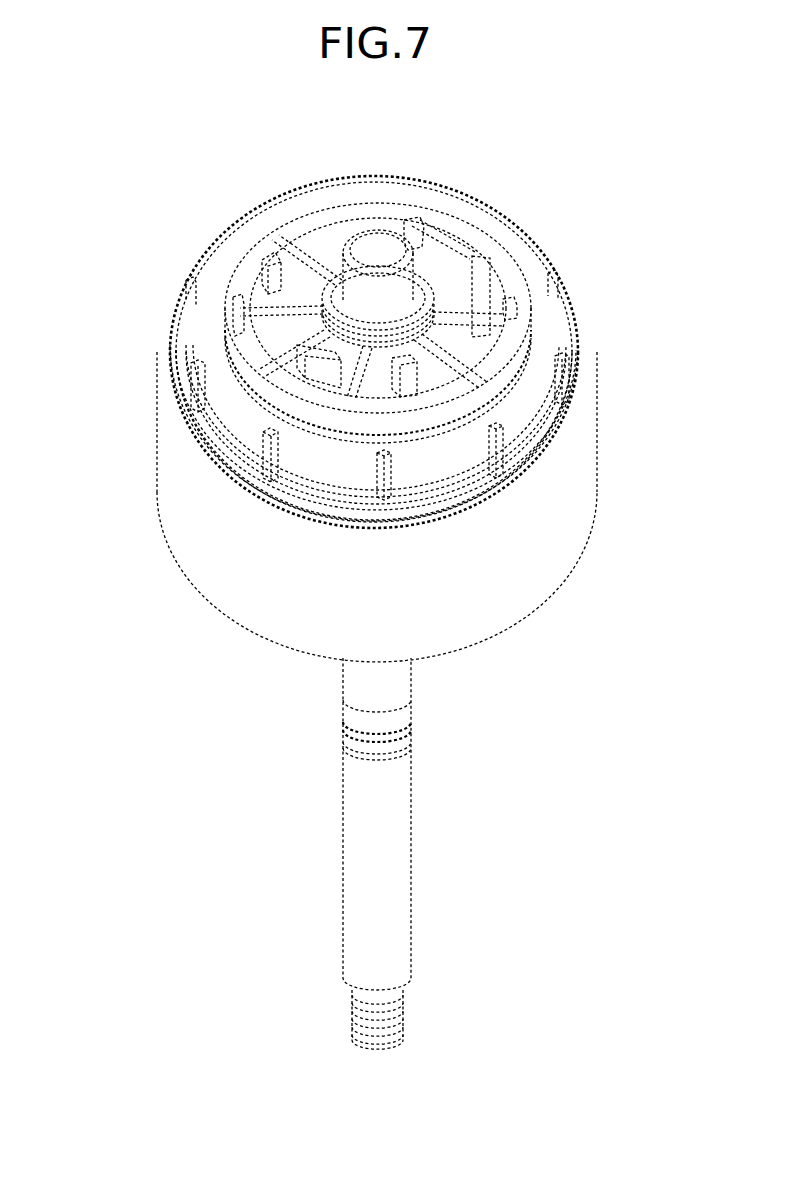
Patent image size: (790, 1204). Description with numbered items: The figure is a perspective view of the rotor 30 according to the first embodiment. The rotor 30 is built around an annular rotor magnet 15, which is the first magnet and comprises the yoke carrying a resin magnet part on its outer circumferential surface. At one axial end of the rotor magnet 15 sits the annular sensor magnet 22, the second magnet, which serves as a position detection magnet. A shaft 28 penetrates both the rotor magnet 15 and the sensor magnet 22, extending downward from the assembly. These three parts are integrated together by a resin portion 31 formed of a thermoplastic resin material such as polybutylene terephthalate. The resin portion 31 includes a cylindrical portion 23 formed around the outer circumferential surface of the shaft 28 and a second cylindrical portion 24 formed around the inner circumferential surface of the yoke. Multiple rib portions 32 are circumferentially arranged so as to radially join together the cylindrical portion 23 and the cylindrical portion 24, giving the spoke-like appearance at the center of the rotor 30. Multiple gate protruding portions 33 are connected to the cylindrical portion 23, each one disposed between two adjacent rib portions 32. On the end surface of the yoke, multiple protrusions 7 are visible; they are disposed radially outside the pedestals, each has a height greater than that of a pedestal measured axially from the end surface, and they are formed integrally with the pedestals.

The protrusions 7 is at (500, 444).
The rotor magnet 15 is at (562, 554).
The sensor magnet 22 is at (486, 221).
The cylindrical portion 23 is at (440, 290).
The cylindrical portion 24 is at (442, 220).
The shaft 28 is at (400, 860).
The rotor 30 is at (618, 196).
The resin portion 31 is at (230, 417).
The rib portions 32 is at (447, 365).
The gate protruding portions 33 is at (296, 277).